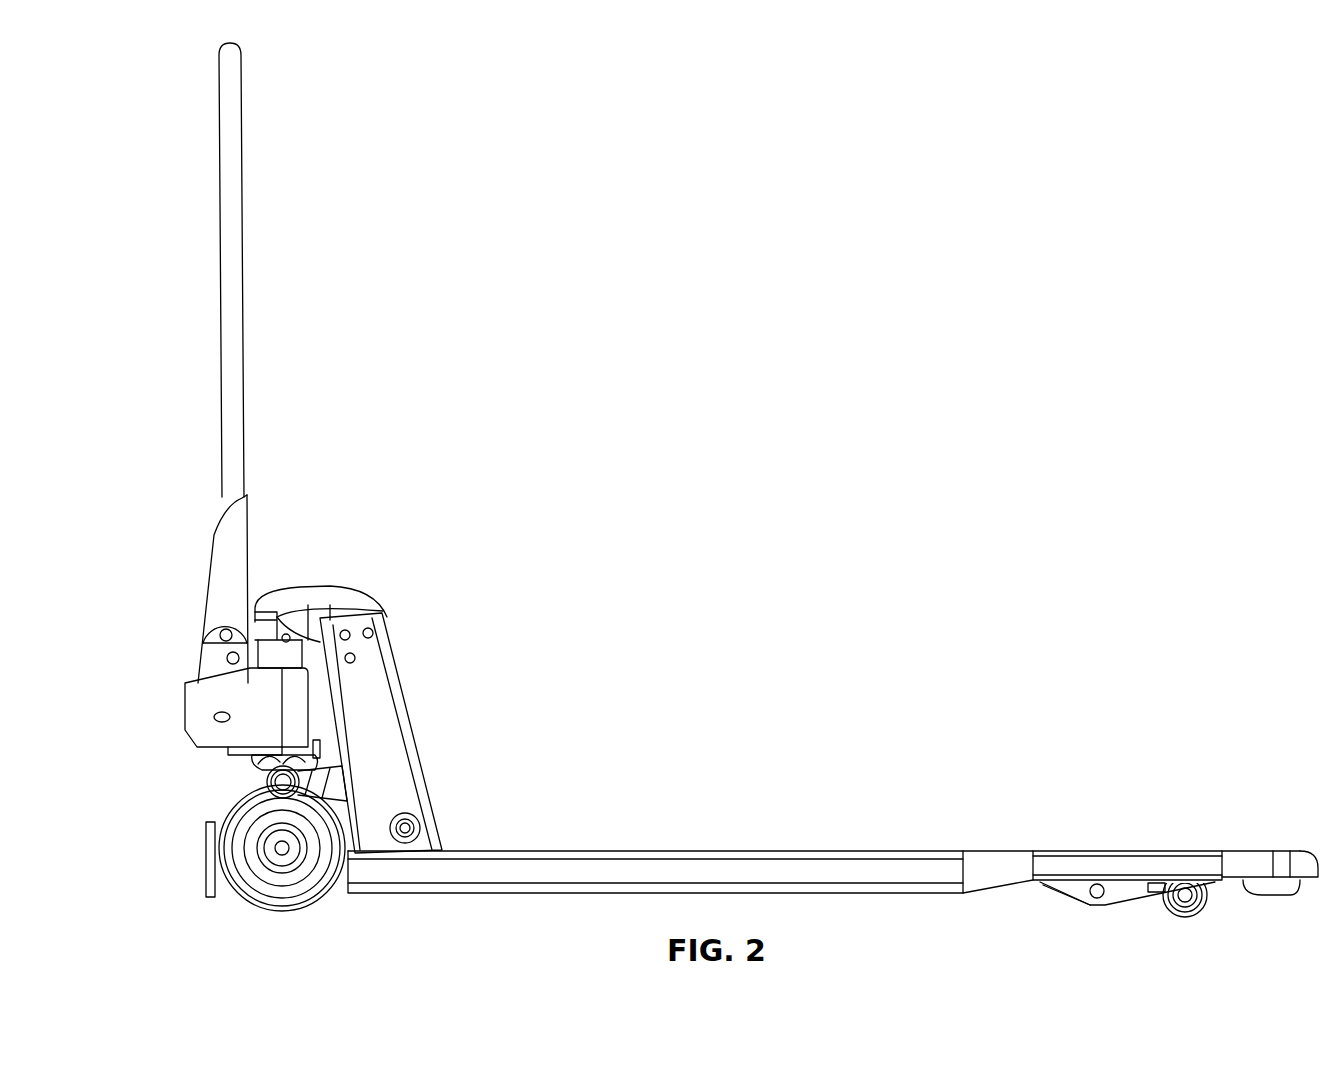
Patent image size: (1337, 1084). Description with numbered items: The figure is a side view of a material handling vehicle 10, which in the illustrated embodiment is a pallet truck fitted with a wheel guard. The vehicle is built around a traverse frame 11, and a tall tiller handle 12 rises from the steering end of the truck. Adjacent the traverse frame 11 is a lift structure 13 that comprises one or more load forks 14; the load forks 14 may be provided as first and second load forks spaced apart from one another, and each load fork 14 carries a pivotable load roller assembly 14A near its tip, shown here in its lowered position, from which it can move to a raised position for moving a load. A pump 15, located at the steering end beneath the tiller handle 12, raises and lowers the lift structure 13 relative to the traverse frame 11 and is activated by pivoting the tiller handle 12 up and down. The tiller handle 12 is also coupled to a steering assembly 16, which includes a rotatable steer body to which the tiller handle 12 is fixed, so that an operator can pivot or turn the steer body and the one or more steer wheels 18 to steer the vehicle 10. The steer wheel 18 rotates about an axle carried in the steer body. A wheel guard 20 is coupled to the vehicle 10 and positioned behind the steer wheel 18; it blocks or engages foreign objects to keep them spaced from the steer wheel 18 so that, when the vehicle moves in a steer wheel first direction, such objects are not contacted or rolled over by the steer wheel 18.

The material handling vehicle 10 is at (735, 337).
The traverse frame 11 is at (265, 760).
The tiller handle 12 is at (265, 132).
The lift structure 13 is at (460, 870).
The load fork 14 is at (955, 832).
The pivotable load roller assembly 14A is at (1188, 928).
The pump 15 is at (270, 703).
The steering assembly 16 is at (149, 771).
The steer wheel 18 is at (236, 903).
The wheel guard 20 is at (182, 889).